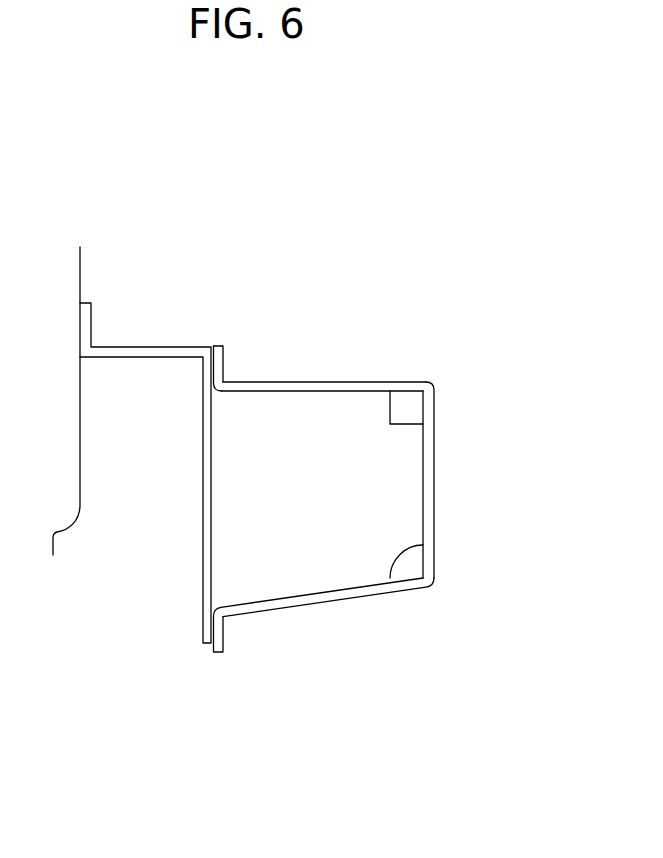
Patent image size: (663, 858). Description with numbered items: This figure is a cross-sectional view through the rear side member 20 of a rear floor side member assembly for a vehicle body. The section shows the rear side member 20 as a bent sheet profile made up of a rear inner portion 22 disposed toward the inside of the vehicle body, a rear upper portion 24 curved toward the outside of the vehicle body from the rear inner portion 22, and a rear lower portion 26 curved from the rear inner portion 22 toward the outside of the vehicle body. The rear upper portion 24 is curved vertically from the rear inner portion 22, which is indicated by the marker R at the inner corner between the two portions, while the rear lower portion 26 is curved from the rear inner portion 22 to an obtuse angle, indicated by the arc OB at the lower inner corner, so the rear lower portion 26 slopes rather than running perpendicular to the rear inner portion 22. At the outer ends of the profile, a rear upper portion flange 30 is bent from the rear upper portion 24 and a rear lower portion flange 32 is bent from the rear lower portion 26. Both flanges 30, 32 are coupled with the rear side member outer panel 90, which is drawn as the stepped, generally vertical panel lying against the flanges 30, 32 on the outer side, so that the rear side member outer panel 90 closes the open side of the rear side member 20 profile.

The rear side member 20 is at (364, 530).
The rear inner portion 22 is at (435, 487).
The rear upper portion 24 is at (362, 381).
The rear lower portion 26 is at (356, 598).
The rear upper portion flange 30 is at (223, 363).
The rear lower portion flange 32 is at (223, 633).
The rear side member outer panel 90 is at (202, 567).
The vertical curve R is at (397, 417).
The obtuse angle OB is at (398, 552).